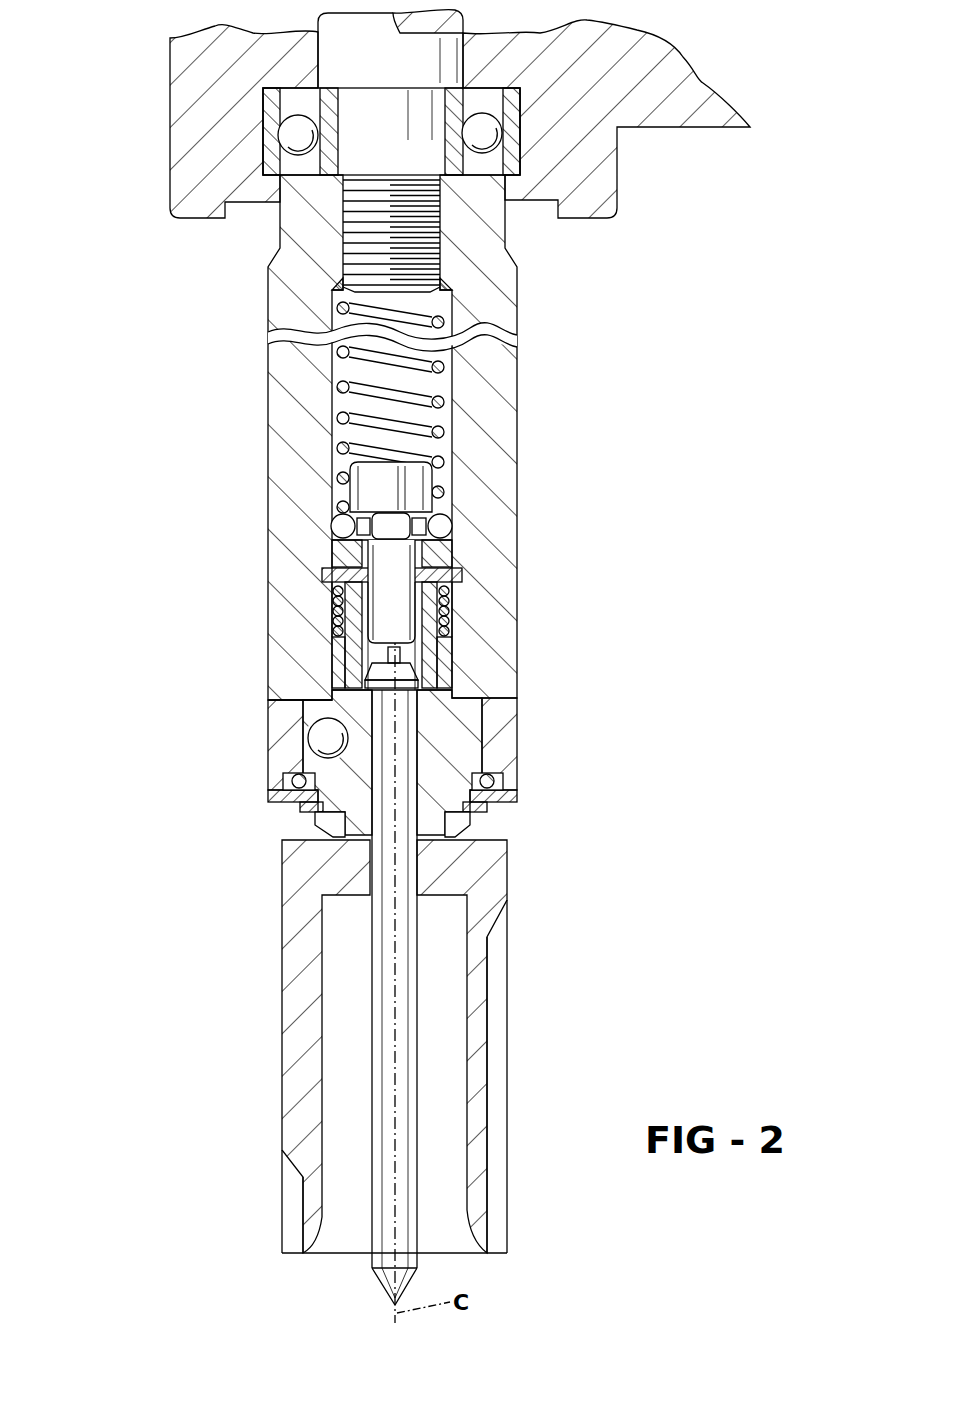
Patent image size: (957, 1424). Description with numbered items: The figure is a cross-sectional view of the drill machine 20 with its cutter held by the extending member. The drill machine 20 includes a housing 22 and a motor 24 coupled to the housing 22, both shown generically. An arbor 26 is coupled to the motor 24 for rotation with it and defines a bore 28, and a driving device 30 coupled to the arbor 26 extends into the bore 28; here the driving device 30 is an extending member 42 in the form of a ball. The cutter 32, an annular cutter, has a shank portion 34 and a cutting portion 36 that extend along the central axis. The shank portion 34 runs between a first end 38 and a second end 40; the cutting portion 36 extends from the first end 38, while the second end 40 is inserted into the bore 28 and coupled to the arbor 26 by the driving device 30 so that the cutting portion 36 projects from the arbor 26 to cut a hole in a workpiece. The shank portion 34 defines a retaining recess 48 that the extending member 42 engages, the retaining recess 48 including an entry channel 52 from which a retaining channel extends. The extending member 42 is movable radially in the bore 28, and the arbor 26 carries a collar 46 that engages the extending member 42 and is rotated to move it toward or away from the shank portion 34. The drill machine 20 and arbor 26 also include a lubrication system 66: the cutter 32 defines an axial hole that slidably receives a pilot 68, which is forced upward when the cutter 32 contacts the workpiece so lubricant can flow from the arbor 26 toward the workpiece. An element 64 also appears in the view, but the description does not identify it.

The drill machine 20 is at (201, 621).
The housing 22 is at (173, 178).
The motor 24 is at (388, 215).
The arbor 26 is at (508, 432).
The bore 28 is at (450, 668).
The driving device 30 is at (240, 738).
The cutter 32 is at (281, 970).
The shank portion 34 is at (470, 748).
The cutting portion 36 is at (498, 955).
The first end 38 is at (333, 833).
The second end 40 is at (268, 702).
The extending member 42 is at (318, 735).
The collar 46 is at (507, 722).
The retaining recess 48 is at (272, 775).
The entry channel 52 is at (287, 720).
The spring 64 is at (390, 407).
The lubrication system 66 is at (348, 495).
The pilot 68 is at (385, 1260).